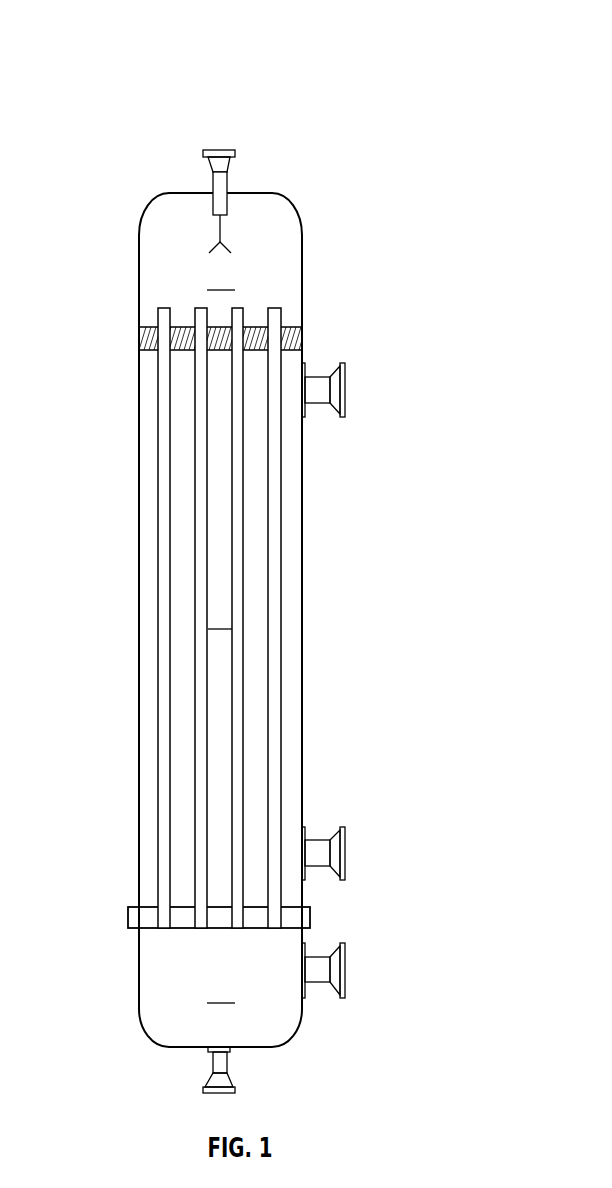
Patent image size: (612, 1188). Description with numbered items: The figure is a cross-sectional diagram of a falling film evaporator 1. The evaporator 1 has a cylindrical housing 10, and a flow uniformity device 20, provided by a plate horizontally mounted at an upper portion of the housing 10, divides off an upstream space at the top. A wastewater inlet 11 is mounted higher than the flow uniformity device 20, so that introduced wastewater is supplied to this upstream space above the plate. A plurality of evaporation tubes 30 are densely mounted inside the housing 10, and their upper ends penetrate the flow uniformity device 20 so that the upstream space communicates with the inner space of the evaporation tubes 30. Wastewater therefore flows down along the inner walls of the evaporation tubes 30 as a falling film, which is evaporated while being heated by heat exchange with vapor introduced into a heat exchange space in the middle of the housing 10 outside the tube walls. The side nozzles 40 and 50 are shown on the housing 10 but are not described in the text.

The evaporator 1 is at (353, 63).
The cylindrical housing 10 is at (322, 268).
The wastewater inlet 11 is at (222, 150).
The flow uniformity device 20 is at (152, 327).
The evaporation tubes 30 is at (163, 524).
The upper side nozzle 40 is at (337, 389).
The lower side nozzle 50 is at (340, 848).